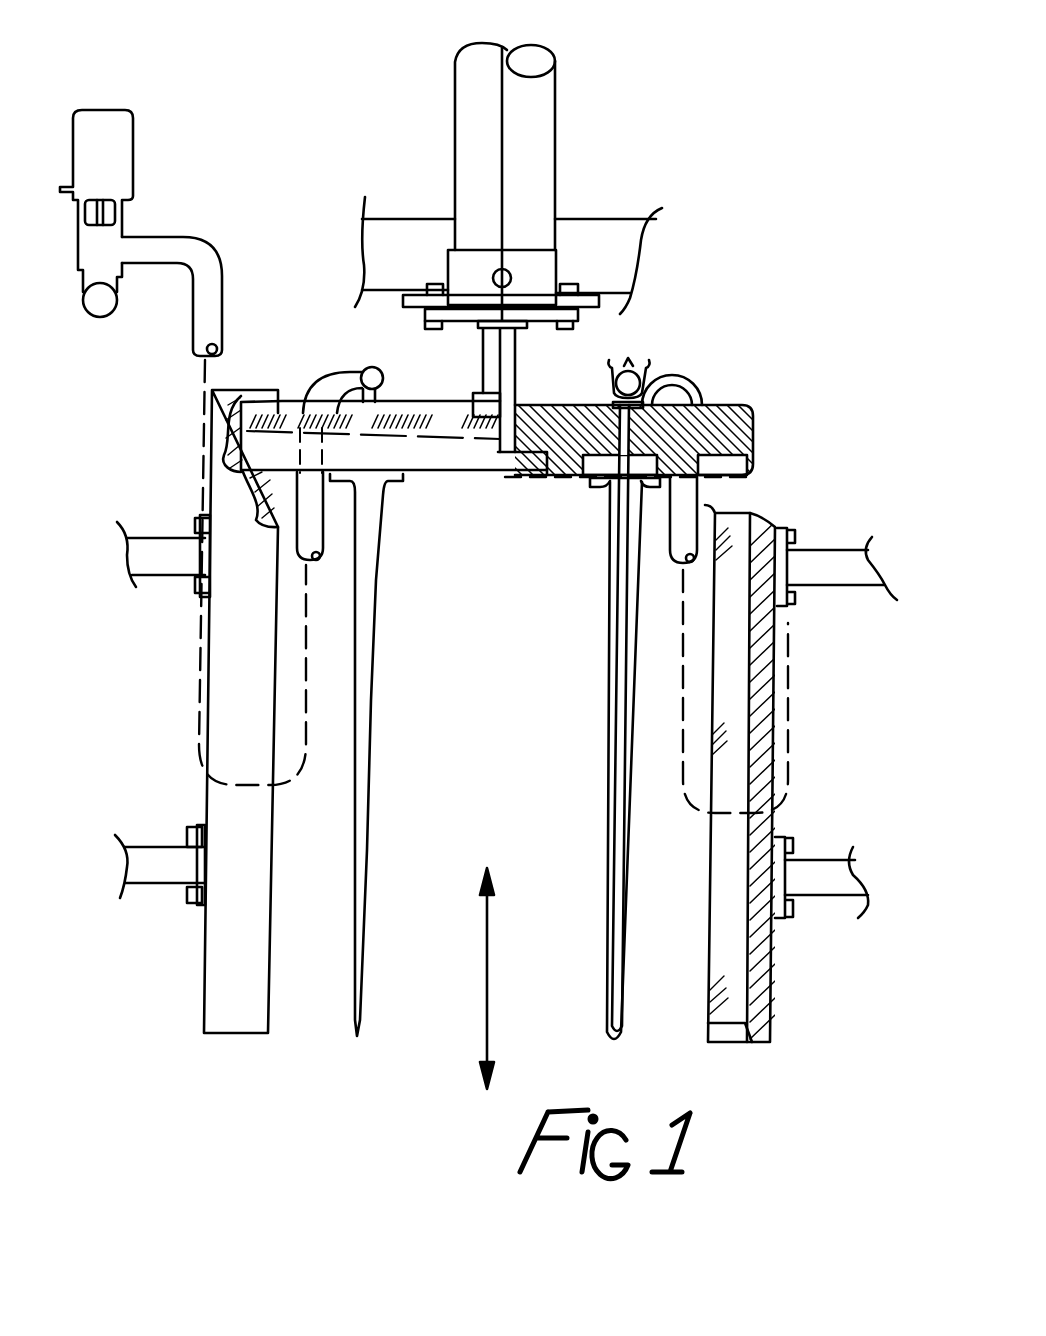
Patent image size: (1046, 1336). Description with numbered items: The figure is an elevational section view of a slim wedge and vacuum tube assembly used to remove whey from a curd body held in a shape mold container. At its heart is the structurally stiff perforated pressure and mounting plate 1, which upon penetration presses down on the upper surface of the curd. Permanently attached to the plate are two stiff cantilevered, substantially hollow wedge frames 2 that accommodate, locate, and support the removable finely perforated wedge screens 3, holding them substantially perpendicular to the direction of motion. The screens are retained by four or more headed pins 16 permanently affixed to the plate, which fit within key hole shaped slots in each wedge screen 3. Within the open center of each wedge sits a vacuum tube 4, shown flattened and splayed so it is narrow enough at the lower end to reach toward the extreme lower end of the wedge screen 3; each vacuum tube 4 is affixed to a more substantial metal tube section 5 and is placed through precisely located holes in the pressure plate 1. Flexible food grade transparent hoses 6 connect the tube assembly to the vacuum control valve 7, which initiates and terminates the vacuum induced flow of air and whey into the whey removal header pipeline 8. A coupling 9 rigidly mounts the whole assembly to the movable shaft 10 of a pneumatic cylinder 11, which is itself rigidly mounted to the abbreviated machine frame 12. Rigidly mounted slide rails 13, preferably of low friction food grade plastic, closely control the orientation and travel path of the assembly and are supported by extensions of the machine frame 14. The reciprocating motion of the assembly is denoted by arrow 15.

The perforated pressure and mounting plate 1 is at (736, 492).
The cantilevered wedge frame 2 is at (366, 605).
The wedge screen 3 is at (606, 665).
The vacuum tube 4 is at (631, 438).
The metal tube section 5 is at (630, 360).
The flexible vacuum hose 6 is at (209, 316).
The vacuum control valve 7 is at (129, 217).
The whey removal header pipeline 8 is at (106, 319).
The coupling 9 is at (524, 397).
The movable shaft 10 is at (478, 366).
The pneumatic cylinder 11 is at (560, 122).
The machine frame 12 is at (609, 218).
The slide rail 13 is at (771, 993).
The machine frame extension 14 is at (806, 855).
The arrow 15 is at (490, 982).
The headed pin 16 is at (598, 490).